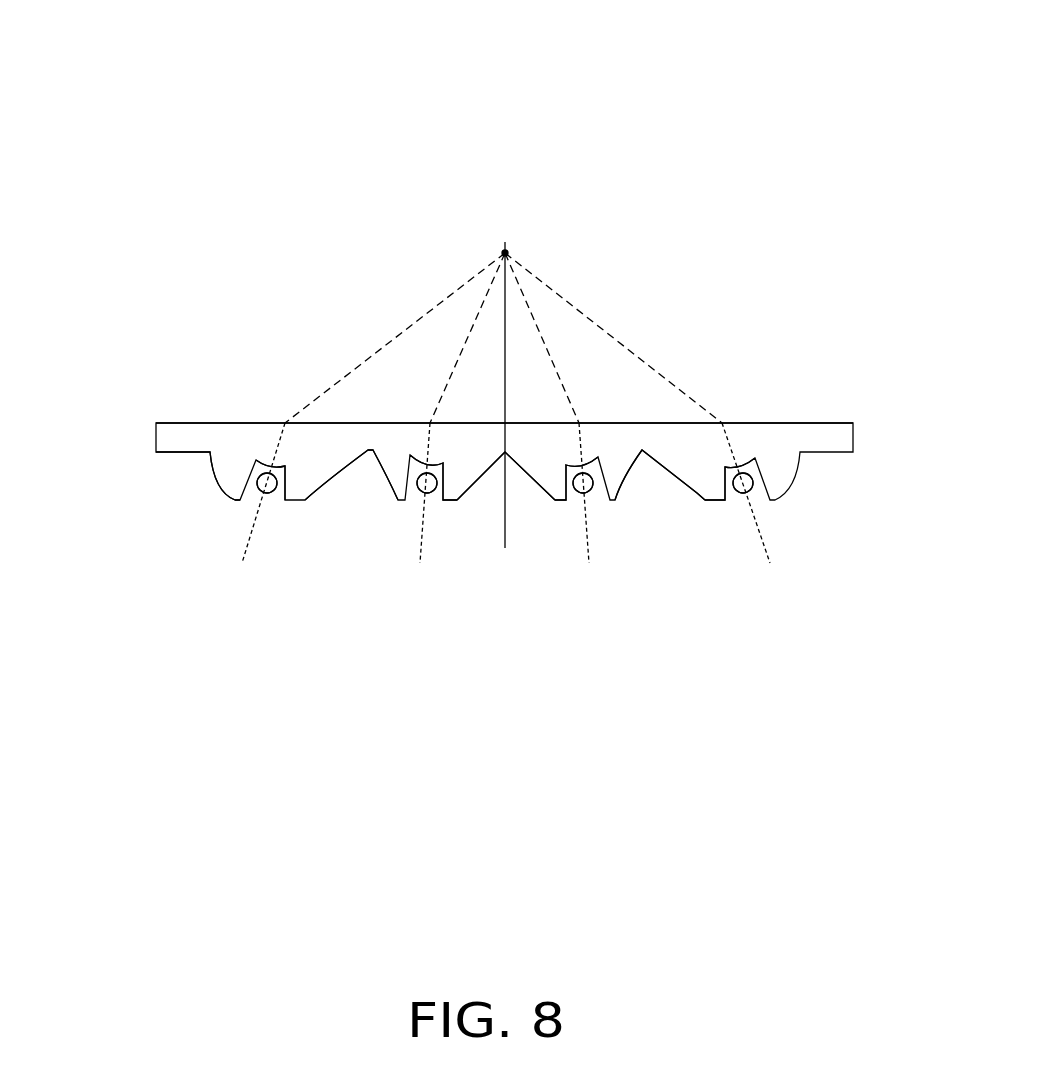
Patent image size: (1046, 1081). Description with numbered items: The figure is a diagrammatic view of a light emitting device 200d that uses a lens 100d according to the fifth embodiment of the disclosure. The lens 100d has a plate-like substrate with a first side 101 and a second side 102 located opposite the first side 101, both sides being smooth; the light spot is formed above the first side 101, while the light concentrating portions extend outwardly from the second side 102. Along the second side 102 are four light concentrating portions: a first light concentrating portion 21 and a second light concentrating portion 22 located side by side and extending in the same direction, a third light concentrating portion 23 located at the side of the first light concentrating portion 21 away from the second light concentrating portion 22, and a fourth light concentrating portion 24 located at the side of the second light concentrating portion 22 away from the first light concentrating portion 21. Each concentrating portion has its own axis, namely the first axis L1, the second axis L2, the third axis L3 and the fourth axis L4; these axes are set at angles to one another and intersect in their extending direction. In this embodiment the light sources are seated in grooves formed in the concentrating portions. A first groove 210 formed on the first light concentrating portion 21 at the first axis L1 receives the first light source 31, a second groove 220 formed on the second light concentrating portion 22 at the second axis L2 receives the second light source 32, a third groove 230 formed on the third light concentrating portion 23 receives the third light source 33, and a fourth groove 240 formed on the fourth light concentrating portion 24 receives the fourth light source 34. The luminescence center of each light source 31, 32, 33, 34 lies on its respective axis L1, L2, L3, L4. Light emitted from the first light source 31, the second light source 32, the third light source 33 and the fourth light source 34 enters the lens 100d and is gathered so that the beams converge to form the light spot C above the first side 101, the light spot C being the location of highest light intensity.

The light emitting device 200d is at (505, 258).
The lens 100d is at (792, 422).
The first side 101 is at (192, 422).
The second side 102 is at (183, 455).
The first light concentrating portion 21 is at (450, 502).
The second light concentrating portion 22 is at (541, 492).
The third light concentrating portion 23 is at (295, 505).
The fourth light concentrating portion 24 is at (684, 485).
The first groove 210 is at (414, 498).
The second groove 220 is at (598, 503).
The third groove 230 is at (253, 497).
The fourth groove 240 is at (729, 503).
The first light source 31 is at (428, 494).
The second light source 32 is at (583, 494).
The third light source 33 is at (267, 494).
The fourth light source 34 is at (742, 494).
The light spot C is at (522, 387).
The first axis L1 is at (445, 408).
The second axis L2 is at (574, 408).
The third axis L3 is at (347, 408).
The fourth axis L4 is at (662, 408).